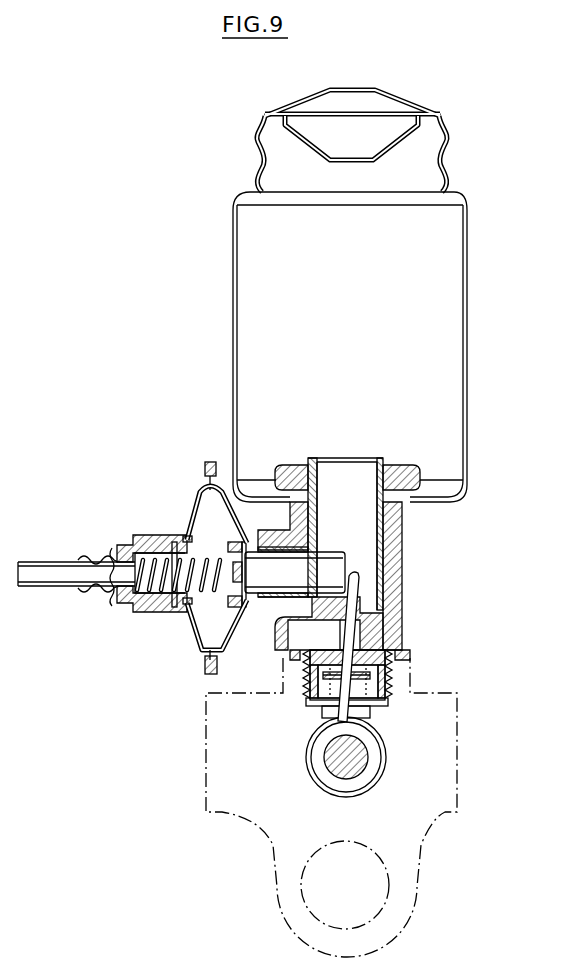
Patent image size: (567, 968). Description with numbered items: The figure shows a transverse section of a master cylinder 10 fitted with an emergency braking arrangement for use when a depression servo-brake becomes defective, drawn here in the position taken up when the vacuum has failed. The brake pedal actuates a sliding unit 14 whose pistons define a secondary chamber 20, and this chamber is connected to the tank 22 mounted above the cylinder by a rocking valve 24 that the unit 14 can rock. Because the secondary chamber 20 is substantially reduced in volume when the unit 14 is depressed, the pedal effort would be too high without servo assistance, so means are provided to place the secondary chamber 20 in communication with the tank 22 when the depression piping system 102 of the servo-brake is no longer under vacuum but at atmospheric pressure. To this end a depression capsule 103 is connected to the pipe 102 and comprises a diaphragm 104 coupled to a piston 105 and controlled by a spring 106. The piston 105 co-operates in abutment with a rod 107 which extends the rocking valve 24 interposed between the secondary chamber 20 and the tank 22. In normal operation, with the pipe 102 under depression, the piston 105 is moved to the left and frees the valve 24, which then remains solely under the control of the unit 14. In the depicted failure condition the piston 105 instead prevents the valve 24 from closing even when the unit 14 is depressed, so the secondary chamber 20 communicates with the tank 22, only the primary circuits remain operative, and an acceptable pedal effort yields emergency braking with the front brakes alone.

The master cylinder 10 is at (458, 717).
The sliding unit 14 is at (322, 750).
The secondary chamber 20 is at (372, 746).
The tank 22 is at (342, 343).
The rocking valve 24 is at (372, 676).
The depression piping system 102 is at (44, 561).
The depression capsule 103 is at (203, 510).
The diaphragm 104 is at (222, 518).
The piston 105 is at (282, 604).
The spring 106 is at (207, 586).
The rod 107 is at (363, 594).